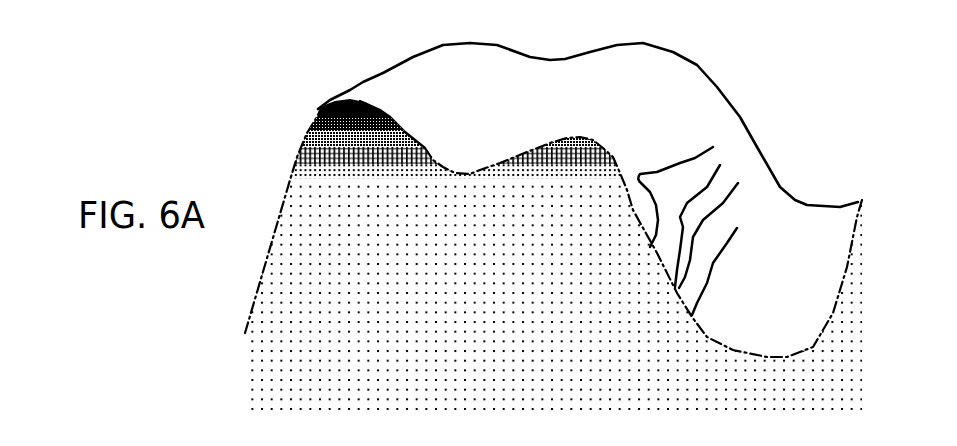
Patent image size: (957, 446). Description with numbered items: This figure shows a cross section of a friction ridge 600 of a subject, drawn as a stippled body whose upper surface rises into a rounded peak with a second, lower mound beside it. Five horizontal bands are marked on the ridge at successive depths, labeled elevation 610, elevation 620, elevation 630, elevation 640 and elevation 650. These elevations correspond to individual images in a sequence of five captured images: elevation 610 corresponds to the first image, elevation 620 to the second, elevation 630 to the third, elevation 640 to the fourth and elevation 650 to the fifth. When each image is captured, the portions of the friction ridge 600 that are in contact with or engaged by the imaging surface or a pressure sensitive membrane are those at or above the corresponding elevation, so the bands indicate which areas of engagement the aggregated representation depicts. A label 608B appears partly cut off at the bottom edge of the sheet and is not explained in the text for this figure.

The friction ridge 600 is at (497, 309).
The elevation 610 is at (318, 113).
The elevation 620 is at (310, 132).
The elevation 630 is at (302, 147).
The elevation 640 is at (297, 163).
The elevation 650 is at (291, 178).
The tissue region 608B is at (163, 440).